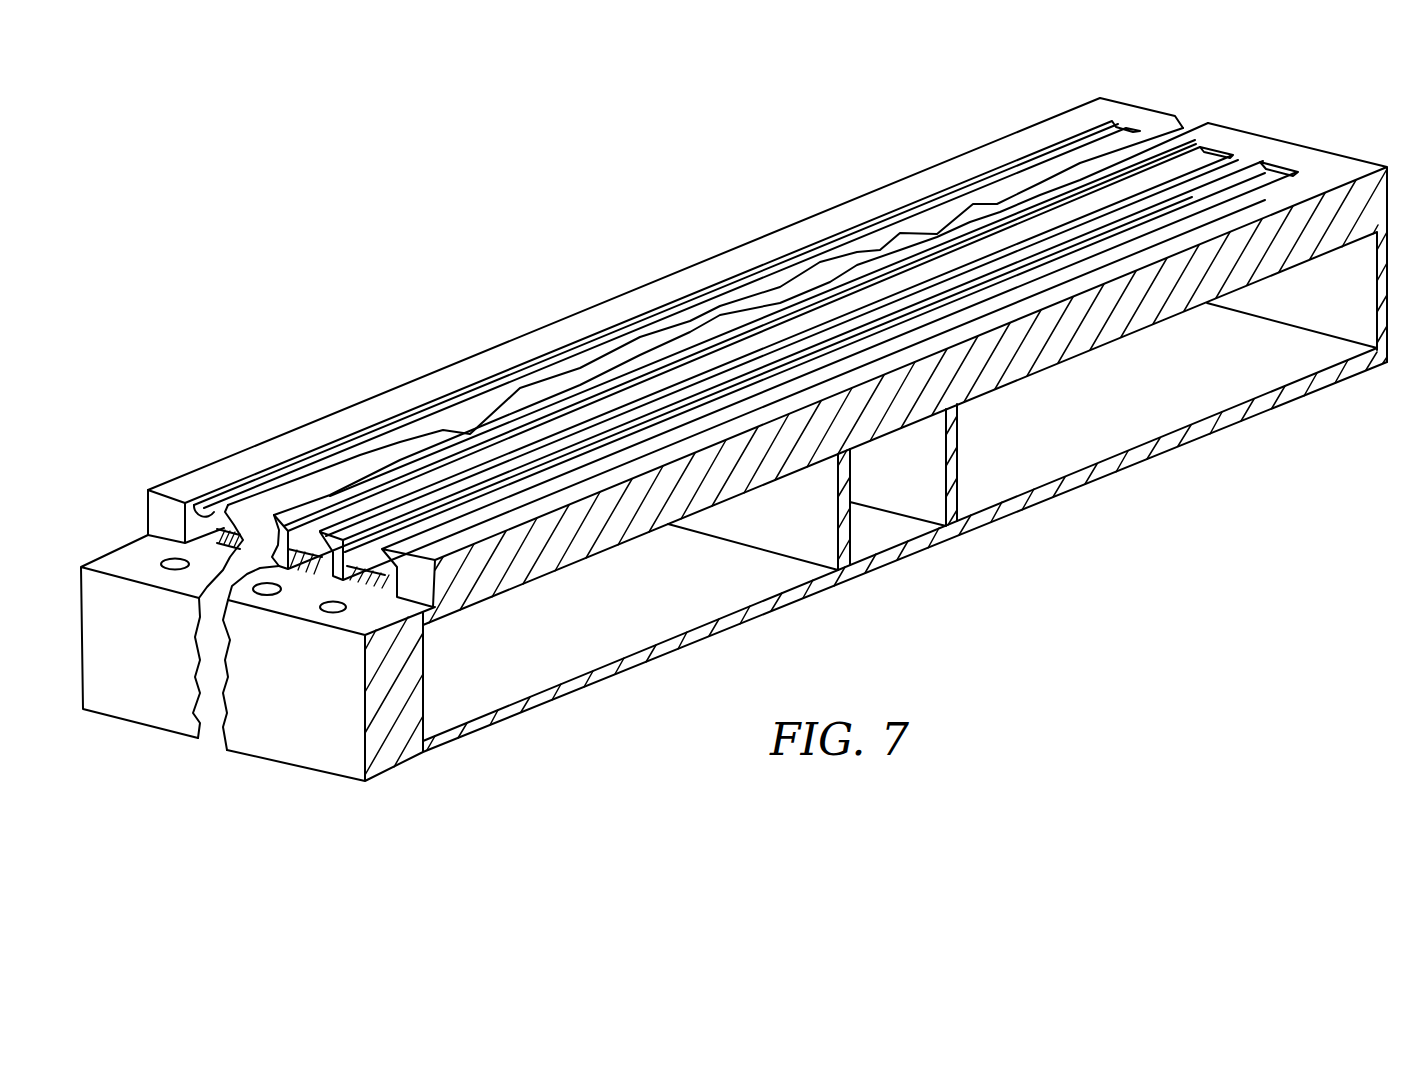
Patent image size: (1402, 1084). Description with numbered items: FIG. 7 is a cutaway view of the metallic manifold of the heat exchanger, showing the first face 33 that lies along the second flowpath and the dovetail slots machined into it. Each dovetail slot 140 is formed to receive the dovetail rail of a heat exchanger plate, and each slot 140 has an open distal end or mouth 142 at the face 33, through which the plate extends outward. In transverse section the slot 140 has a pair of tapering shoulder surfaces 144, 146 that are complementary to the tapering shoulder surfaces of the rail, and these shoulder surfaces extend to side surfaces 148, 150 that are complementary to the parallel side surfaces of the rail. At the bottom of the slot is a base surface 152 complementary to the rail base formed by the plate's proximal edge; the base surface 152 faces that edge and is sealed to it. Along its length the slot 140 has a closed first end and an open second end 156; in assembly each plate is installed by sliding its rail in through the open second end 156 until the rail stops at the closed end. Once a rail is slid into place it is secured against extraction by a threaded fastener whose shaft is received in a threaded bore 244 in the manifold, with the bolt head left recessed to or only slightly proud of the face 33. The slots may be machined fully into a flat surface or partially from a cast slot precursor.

The first face 33 is at (548, 338).
The dovetail slot 140 is at (254, 483).
The open distal end or mouth 142 is at (475, 389).
The tapering shoulder surface 144 is at (211, 507).
The tapering shoulder surface 146 is at (206, 521).
The side surface 148 is at (290, 552).
The side surface 150 is at (328, 562).
The base surface 152 is at (372, 590).
The open second end 156 is at (388, 599).
The threaded bore 244 is at (170, 563).